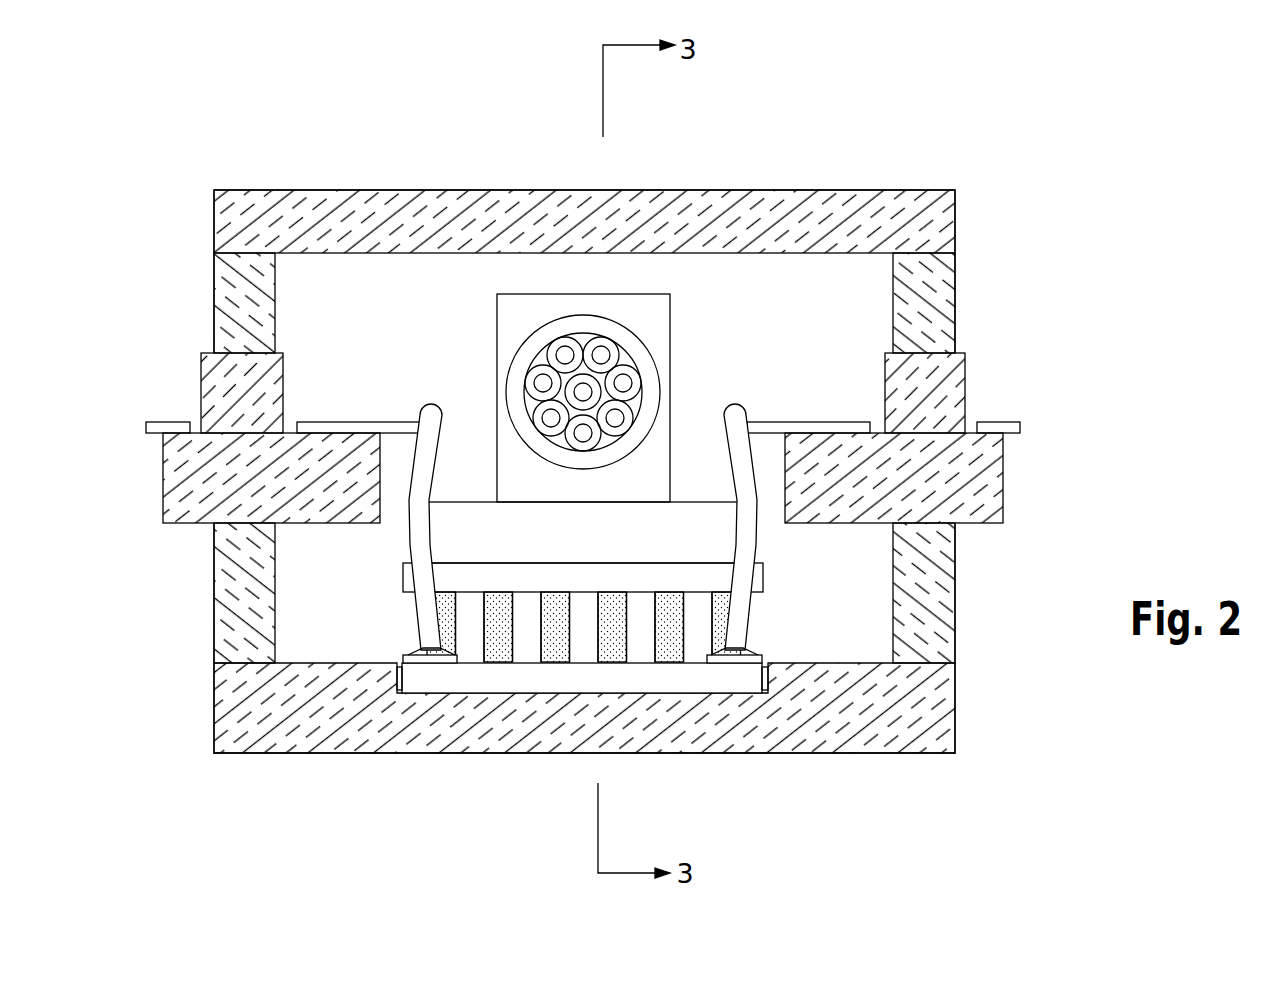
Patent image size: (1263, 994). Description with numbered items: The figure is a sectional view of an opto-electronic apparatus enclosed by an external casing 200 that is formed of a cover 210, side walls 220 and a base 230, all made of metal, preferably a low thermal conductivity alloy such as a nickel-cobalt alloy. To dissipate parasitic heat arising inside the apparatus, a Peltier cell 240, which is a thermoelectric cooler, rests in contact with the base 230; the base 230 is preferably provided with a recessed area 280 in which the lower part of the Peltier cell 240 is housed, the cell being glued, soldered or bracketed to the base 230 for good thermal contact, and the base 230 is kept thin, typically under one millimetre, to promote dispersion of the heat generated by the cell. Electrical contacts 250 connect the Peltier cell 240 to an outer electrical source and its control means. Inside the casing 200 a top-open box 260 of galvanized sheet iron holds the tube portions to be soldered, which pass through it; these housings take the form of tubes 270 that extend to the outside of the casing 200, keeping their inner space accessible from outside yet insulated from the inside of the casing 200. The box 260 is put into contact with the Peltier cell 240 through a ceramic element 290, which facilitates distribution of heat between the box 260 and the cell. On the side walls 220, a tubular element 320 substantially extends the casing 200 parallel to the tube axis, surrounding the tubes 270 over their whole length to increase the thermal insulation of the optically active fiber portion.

The external casing 200 is at (955, 190).
The cover 210 is at (410, 190).
The side walls 220 is at (242, 291).
The base 230 is at (902, 755).
The Peltier cell 240 is at (406, 590).
The electrical contacts 250 is at (417, 410).
The top-open box 260 is at (497, 330).
The tubes 270 is at (642, 378).
The recessed area 280 is at (767, 678).
The ceramic element 290 is at (447, 541).
The tubular element 320 is at (213, 400).